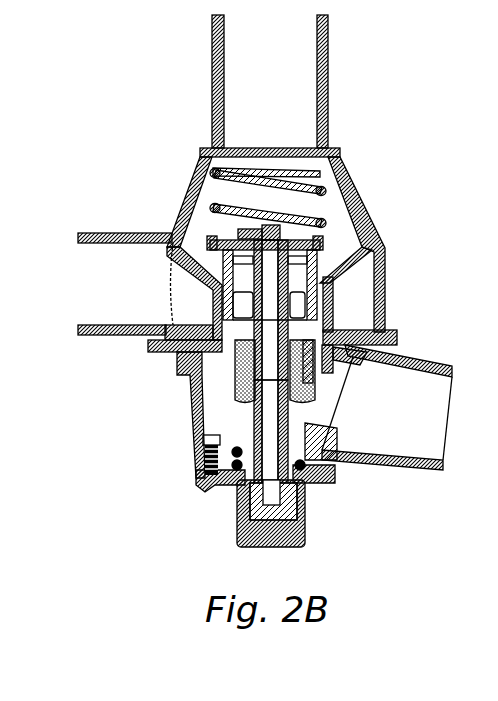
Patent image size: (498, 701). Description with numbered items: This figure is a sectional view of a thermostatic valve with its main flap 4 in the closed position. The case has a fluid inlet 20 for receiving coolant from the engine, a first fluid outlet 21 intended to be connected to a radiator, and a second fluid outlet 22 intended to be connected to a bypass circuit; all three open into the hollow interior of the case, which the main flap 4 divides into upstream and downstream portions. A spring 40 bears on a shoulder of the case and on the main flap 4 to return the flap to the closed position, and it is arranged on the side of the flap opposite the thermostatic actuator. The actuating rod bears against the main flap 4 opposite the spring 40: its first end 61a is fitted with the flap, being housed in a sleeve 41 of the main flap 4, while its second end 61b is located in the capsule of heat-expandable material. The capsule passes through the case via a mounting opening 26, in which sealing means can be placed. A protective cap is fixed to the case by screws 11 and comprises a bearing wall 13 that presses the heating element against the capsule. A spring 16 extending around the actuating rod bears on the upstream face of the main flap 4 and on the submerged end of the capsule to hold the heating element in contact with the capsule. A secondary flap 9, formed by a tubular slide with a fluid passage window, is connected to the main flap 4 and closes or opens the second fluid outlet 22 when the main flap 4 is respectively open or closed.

The first fluid outlet 21 is at (330, 58).
The spring 40 is at (340, 177).
The first end 61a is at (282, 222).
The main flap 4 is at (320, 243).
The second fluid outlet 22 is at (103, 235).
The sleeve 41 is at (262, 233).
The fluid inlet 20 is at (422, 367).
The spring 16 is at (178, 348).
The secondary flap 9 is at (183, 375).
The screws 11 is at (207, 492).
The bearing wall 13 is at (237, 530).
The second end 61b is at (305, 515).
The mounting opening 26 is at (340, 460).